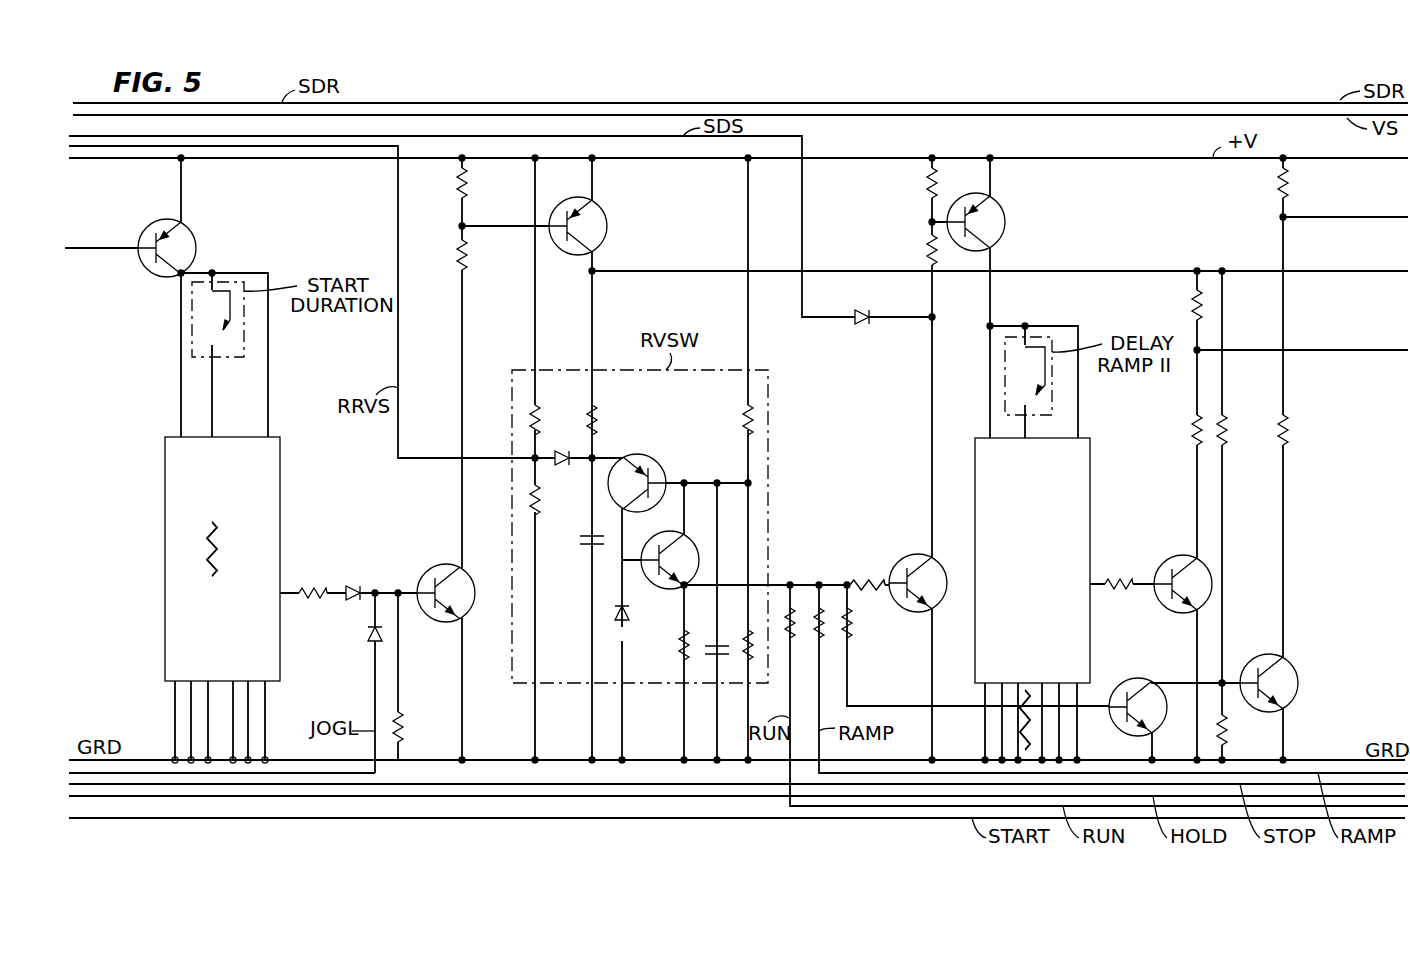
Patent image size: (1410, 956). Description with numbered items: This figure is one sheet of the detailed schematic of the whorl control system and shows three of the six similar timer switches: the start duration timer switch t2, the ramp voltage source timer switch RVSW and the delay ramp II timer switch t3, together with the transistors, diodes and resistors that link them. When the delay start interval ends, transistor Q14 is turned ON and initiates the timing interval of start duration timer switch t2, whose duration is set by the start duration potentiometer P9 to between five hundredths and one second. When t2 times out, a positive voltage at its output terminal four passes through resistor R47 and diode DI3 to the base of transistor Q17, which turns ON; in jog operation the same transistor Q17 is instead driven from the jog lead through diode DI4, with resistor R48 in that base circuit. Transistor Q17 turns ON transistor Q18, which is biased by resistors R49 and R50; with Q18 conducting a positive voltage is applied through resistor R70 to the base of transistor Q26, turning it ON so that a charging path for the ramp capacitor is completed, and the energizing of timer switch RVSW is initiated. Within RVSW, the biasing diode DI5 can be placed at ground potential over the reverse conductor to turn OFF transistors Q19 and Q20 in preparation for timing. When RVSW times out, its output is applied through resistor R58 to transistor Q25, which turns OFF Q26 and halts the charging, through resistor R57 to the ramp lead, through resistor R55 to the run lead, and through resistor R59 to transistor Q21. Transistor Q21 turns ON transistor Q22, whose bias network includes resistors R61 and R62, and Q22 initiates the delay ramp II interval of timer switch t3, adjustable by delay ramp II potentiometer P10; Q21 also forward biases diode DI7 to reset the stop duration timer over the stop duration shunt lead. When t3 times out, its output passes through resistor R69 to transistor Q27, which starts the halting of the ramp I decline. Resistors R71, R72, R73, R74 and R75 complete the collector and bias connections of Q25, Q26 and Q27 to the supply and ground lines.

The transistor Q14 is at (166, 237).
The start duration potentiometer P9 is at (244, 348).
The resistor R49 is at (487, 183).
The resistor R50 is at (487, 257).
The transistor Q18 is at (578, 215).
The resistor R62 is at (913, 185).
The resistor R61 is at (915, 250).
The transistor Q22 is at (994, 217).
The resistor R73 is at (1308, 185).
The diode DI7 is at (871, 304).
The resistor R74 is at (1181, 305).
The delay ramp II potentiometer P10 is at (1052, 402).
The resistor R75 is at (1178, 428).
The resistor R70 is at (1245, 428).
The resistor R72 is at (1307, 428).
The ramp voltage source timer switch RVSW is at (628, 525).
The biasing diode DI5 is at (568, 445).
The transistor Q19 is at (639, 471).
The transistor Q20 is at (670, 551).
The resistor R55 is at (793, 600).
The resistor R57 is at (822, 600).
The resistor R59 is at (872, 574).
The resistor R58 is at (870, 623).
The transistor Q21 is at (918, 573).
The start duration timer switch t2 is at (239, 561).
The delay ramp II timer switch t3 is at (1047, 560).
The resistor R69 is at (1123, 573).
The transistor Q27 is at (1183, 573).
The transistor Q25 is at (1138, 697).
The transistor Q26 is at (1269, 673).
The resistor R71 is at (1244, 730).
The resistor R47 is at (317, 579).
The diode DI3 is at (362, 580).
The diode DI4 is at (359, 635).
The transistor Q17 is at (446, 583).
The resistor R48 is at (422, 727).